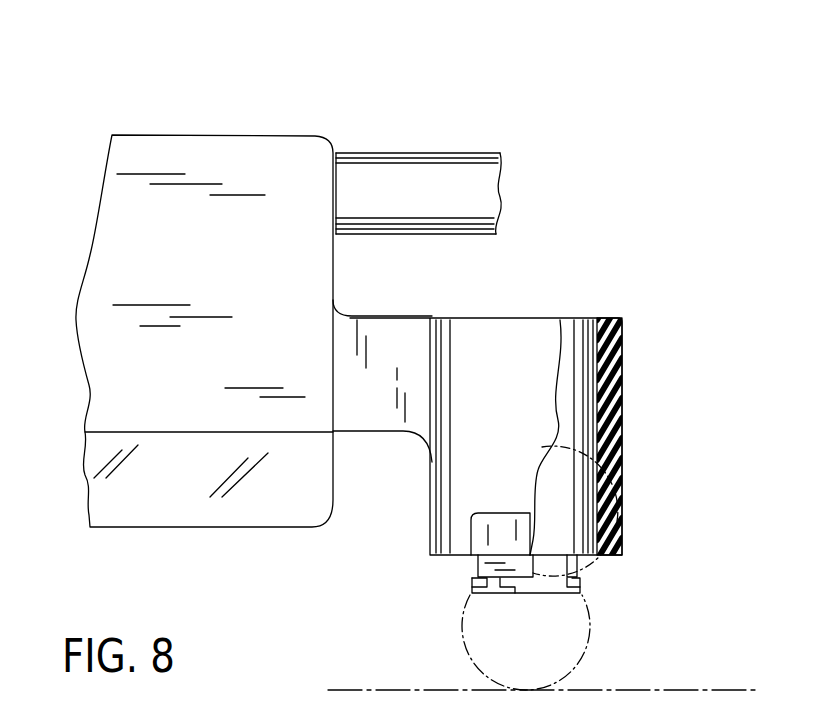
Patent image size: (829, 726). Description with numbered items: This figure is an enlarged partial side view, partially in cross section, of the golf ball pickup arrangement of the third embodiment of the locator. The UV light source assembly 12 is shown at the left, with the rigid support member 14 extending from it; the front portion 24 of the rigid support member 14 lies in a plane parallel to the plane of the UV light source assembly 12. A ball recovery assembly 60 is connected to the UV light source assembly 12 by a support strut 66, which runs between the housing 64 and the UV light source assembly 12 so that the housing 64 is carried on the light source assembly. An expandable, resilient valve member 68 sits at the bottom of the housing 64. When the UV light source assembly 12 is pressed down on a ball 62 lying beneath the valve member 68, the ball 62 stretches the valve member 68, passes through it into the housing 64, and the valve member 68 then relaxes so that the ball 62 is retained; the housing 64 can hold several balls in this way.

The UV light source assembly 12 is at (224, 130).
The rigid support member 14 is at (441, 136).
The front portion 24 is at (366, 153).
The ball recovery assembly 60 is at (540, 415).
The ball 62 is at (577, 670).
The housing 64 is at (612, 383).
The support strut 66 is at (402, 355).
The expandable, resilient valve member 68 is at (484, 593).